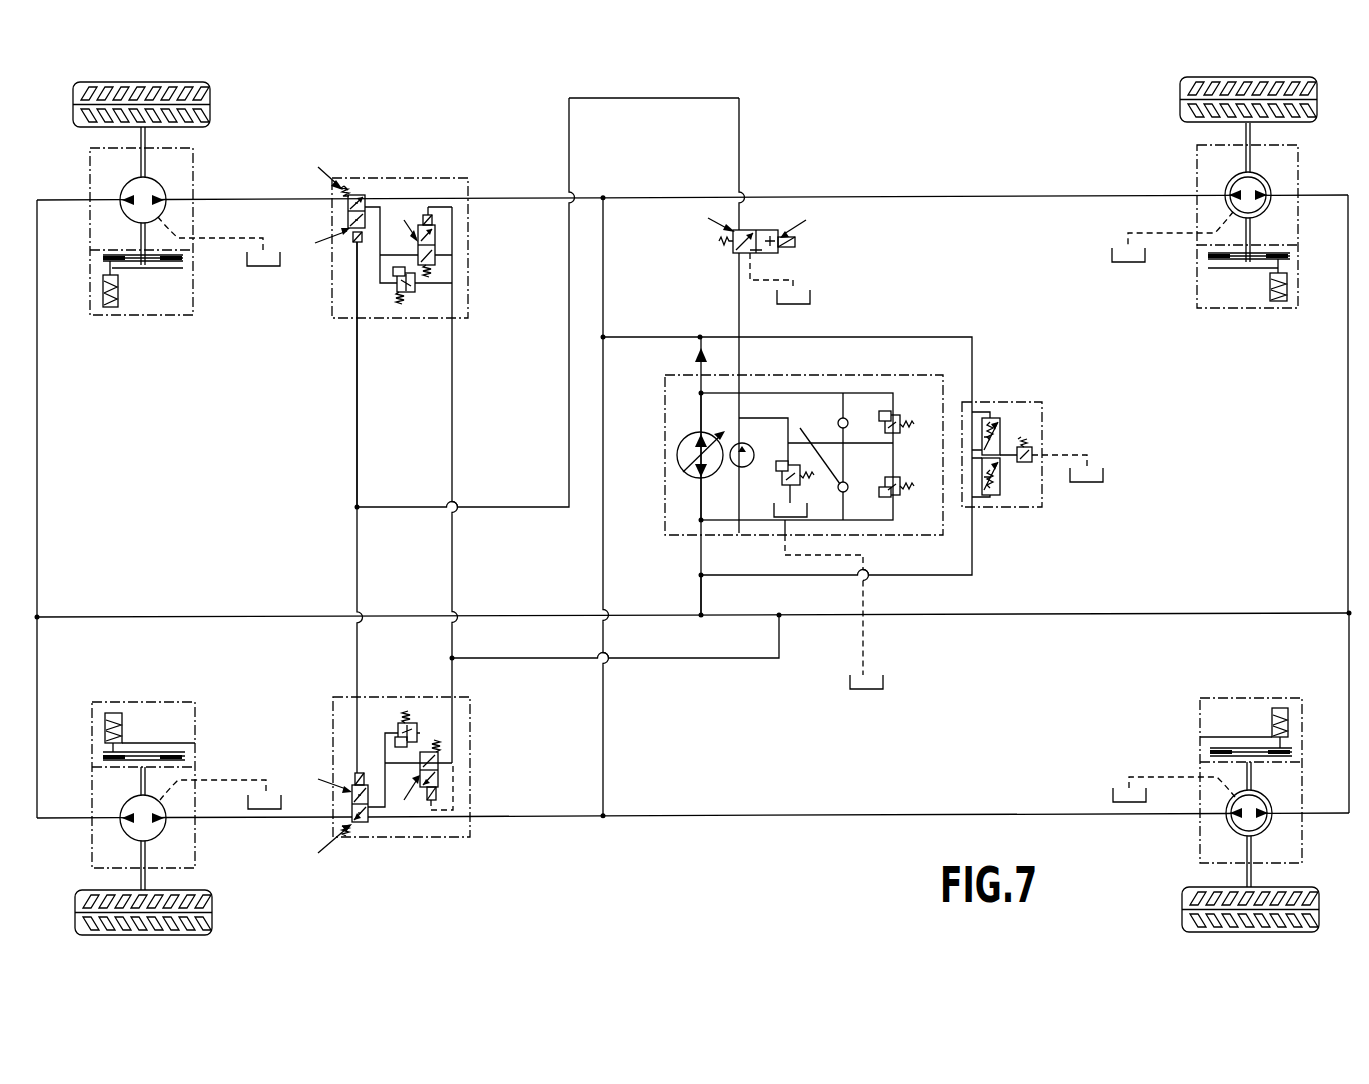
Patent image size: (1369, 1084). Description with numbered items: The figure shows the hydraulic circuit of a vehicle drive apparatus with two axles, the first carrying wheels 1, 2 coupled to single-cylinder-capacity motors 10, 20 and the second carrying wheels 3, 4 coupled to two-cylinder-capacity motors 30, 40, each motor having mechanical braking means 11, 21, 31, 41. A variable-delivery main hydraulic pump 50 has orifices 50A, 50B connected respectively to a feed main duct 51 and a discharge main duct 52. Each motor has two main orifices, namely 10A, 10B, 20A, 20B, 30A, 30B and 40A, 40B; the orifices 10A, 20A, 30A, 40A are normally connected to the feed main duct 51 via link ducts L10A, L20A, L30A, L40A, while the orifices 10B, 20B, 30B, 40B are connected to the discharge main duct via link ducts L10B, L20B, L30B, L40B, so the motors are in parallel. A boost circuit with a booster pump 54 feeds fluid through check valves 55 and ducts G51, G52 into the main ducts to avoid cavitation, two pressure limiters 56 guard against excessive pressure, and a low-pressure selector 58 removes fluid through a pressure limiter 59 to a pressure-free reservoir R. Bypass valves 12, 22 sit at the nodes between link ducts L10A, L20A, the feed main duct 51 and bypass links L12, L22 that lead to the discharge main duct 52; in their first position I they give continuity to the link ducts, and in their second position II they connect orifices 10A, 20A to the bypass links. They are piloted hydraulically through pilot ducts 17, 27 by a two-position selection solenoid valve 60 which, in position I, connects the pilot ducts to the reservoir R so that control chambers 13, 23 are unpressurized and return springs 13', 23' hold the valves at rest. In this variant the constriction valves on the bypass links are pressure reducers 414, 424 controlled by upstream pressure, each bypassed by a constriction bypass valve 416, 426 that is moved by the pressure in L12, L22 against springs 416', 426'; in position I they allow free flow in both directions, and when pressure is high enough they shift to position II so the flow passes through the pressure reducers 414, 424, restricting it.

The wheel 1 is at (213, 100).
The wheel 2 is at (213, 916).
The wheel 3 is at (1180, 100).
The wheel 4 is at (1183, 915).
The motor 10 is at (152, 186).
The main orifice 10A is at (172, 198).
The main orifice 10B is at (122, 197).
The mechanical braking means 11 is at (151, 301).
The bypass valve 12 is at (375, 185).
The control chamber 13 is at (328, 236).
The return spring 13' is at (334, 159).
The pilot duct 17 is at (356, 378).
The motor 20 is at (155, 827).
The main orifice 20A is at (172, 821).
The main orifice 20B is at (120, 821).
The mechanical braking means 21 is at (150, 728).
The bypass valve 22 is at (376, 832).
The control chamber 23 is at (330, 780).
The return spring 23' is at (338, 859).
The pilot duct 27 is at (356, 583).
The motor 30 is at (1266, 178).
The main orifice 30A is at (1238, 195).
The main orifice 30B is at (1260, 196).
The mechanical braking means 31 is at (1250, 291).
The motor 40 is at (1258, 838).
The main orifice 40A is at (1236, 813).
The main orifice 40B is at (1266, 814).
The mechanical braking means 41 is at (1250, 724).
The main hydraulic pump 50 is at (685, 455).
The orifice 50A is at (696, 422).
The orifice 50B is at (702, 480).
The feed main duct 51 is at (706, 340).
The discharge main duct 52 is at (701, 591).
The booster pump 54 is at (744, 464).
The check valve 55 is at (838, 424).
The pressure limiter 56 is at (904, 492).
The low-pressure selector 58 is at (1014, 477).
The pressure limiter 59 is at (1030, 446).
The selection solenoid valve 60 is at (759, 226).
The pressure reducer 414 is at (404, 306).
The constriction bypass valve 416 is at (437, 196).
The spring 416' is at (476, 278).
The pressure reducer 424 is at (404, 718).
The constriction bypass valve 426 is at (467, 781).
The spring 426' is at (474, 726).
The duct G51 is at (780, 392).
The duct G52 is at (780, 534).
The link duct L10A is at (543, 196).
The link duct L10B is at (37, 354).
The bypass link L12 is at (451, 445).
The link duct L20A is at (548, 812).
The link duct L20B is at (37, 639).
The bypass link L22 is at (454, 678).
The link duct L30A is at (892, 196).
The link duct L30B is at (1348, 373).
The link duct L40A is at (893, 814).
The link duct L40B is at (1349, 638).
The pressure-free reservoir R is at (810, 296).
The first position I is at (520, 507).
The second position II is at (560, 510).